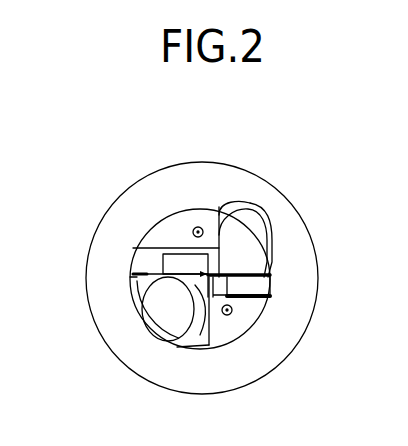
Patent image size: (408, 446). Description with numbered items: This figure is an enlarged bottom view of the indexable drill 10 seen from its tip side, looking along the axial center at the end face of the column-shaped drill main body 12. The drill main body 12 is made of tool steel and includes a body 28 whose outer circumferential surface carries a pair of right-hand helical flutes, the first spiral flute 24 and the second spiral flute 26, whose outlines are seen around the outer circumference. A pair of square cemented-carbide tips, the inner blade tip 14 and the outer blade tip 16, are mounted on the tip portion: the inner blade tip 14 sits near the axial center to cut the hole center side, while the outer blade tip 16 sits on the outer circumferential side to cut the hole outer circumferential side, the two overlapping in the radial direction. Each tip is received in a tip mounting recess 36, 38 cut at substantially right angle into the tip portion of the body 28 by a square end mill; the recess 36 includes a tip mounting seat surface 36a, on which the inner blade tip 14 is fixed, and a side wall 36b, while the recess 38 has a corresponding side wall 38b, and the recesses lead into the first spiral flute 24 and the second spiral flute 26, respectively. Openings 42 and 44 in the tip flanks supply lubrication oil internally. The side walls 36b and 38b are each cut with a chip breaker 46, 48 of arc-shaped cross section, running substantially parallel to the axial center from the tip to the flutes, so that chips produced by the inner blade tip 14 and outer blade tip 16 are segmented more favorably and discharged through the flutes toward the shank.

The indexable drill 10 is at (285, 140).
The drill main body 12 is at (302, 356).
The inner blade tip 14 is at (162, 262).
The outer blade tip 16 is at (258, 282).
The first spiral flute 24 is at (160, 293).
The second spiral flute 26 is at (250, 233).
The body 28 is at (142, 218).
The tip mounting recess 36 is at (138, 327).
The tip mounting seat surface 36a is at (136, 281).
The side wall 36b is at (193, 337).
The tip mounting recess 38 is at (272, 259).
The side wall 38b is at (229, 216).
The opening 42 is at (193, 229).
The opening 44 is at (231, 314).
The chip breaker 46 is at (140, 343).
The chip breaker 48 is at (243, 252).